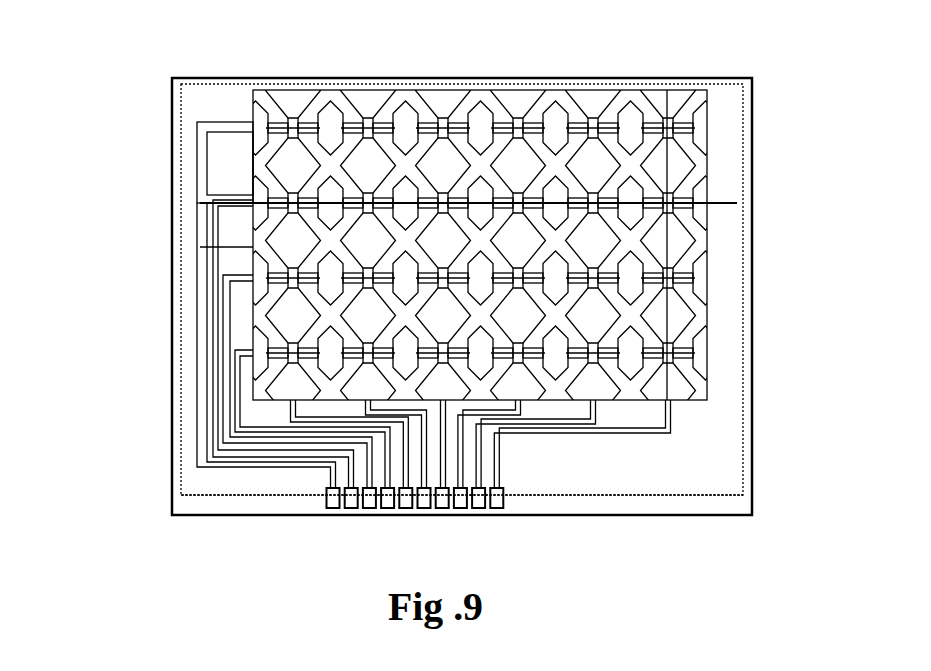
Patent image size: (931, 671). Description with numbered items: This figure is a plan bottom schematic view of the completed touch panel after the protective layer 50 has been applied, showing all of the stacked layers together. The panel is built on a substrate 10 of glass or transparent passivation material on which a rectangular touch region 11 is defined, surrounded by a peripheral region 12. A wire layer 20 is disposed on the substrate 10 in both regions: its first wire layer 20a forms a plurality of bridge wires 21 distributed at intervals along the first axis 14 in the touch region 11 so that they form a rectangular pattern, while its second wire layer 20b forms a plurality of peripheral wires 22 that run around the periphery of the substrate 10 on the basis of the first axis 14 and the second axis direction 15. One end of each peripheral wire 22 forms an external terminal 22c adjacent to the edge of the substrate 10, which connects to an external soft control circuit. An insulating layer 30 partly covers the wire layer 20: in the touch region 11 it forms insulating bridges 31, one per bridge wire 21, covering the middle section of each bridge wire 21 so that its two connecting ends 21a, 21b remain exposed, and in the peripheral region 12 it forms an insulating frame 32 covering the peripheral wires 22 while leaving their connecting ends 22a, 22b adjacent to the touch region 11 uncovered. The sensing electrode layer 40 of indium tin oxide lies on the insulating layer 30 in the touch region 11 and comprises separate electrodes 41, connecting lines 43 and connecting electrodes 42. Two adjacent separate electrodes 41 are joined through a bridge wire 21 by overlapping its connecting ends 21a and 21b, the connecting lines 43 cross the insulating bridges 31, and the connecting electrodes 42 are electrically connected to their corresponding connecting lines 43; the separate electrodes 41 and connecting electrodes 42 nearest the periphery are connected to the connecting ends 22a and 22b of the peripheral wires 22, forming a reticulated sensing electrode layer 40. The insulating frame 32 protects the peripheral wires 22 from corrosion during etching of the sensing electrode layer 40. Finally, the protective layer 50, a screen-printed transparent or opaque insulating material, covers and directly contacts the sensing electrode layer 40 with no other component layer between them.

The substrate 10 is at (213, 506).
The touch region 11 is at (708, 242).
The peripheral region 12 is at (745, 150).
The first axis 14 is at (669, 94).
The second axis direction 15 is at (714, 203).
The wire layer 20 is at (398, 192).
The first wire layer 20a is at (264, 126).
The second wire layer 20b is at (119, 255).
The bridge wire 21 is at (507, 118).
The connecting end 21a is at (334, 110).
The connecting end 21b is at (424, 116).
The peripheral wire 22 is at (396, 378).
The connecting end 22a is at (236, 368).
The connecting end 22b is at (250, 400).
The external terminal 22c is at (355, 509).
The insulating layer 30 is at (385, 265).
The insulating bridge 31 is at (406, 104).
The insulating frame 32 is at (199, 179).
The sensing electrode layer 40 is at (591, 80).
The separate electrode 41 is at (626, 99).
The connecting electrode 42 is at (591, 108).
The connecting line 43 is at (562, 112).
The protective layer 50 is at (678, 495).